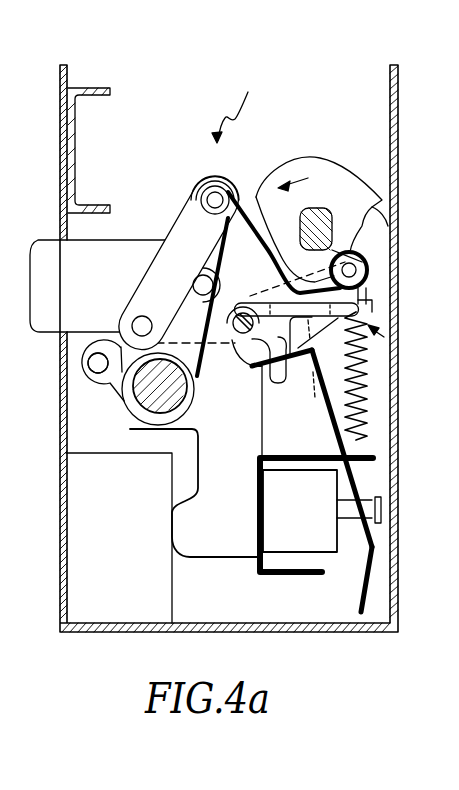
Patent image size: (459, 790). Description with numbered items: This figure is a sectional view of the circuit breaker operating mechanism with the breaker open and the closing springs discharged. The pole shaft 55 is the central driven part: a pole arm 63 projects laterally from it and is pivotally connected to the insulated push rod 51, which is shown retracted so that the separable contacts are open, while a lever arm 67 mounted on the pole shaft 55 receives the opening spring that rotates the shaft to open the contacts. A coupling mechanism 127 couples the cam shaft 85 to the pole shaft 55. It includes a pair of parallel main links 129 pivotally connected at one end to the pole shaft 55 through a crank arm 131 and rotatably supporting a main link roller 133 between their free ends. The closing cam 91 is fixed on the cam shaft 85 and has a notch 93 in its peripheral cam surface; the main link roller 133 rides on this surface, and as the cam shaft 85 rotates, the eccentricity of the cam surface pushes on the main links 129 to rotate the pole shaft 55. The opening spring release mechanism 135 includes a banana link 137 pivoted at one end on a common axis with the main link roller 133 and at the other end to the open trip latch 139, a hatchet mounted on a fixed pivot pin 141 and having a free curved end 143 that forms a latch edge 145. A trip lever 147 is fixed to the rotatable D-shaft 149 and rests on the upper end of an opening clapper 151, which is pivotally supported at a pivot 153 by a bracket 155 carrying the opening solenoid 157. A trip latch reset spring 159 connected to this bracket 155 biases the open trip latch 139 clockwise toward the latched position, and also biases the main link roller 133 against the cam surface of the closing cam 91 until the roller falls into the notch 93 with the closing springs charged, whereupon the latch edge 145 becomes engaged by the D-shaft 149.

The insulated push rod 51 is at (40, 242).
The pole shaft 55 is at (150, 408).
The pole arm 63 is at (178, 312).
The lever arm 67 is at (103, 384).
The cam shaft 85 is at (368, 268).
The closing cam 91 is at (351, 166).
The notch 93 is at (368, 209).
The coupling mechanism 127 is at (238, 104).
The main links 129 is at (186, 232).
The crank arm 131 is at (127, 338).
The main link roller 133 is at (214, 176).
The opening spring release mechanism 135 is at (384, 337).
The banana link 137 is at (256, 220).
The open trip latch 139 is at (362, 306).
The fixed pivot pin 141 is at (318, 360).
The free curved end 143 is at (253, 352).
The latch edge 145 is at (274, 388).
The trip lever 147 is at (373, 312).
The D-shaft 149 is at (192, 280).
The opening clapper 151 is at (372, 441).
The clapper pivot 153 is at (363, 467).
The bracket 155 is at (288, 577).
The opening solenoid 157 is at (328, 538).
The trip latch reset spring 159 is at (368, 368).